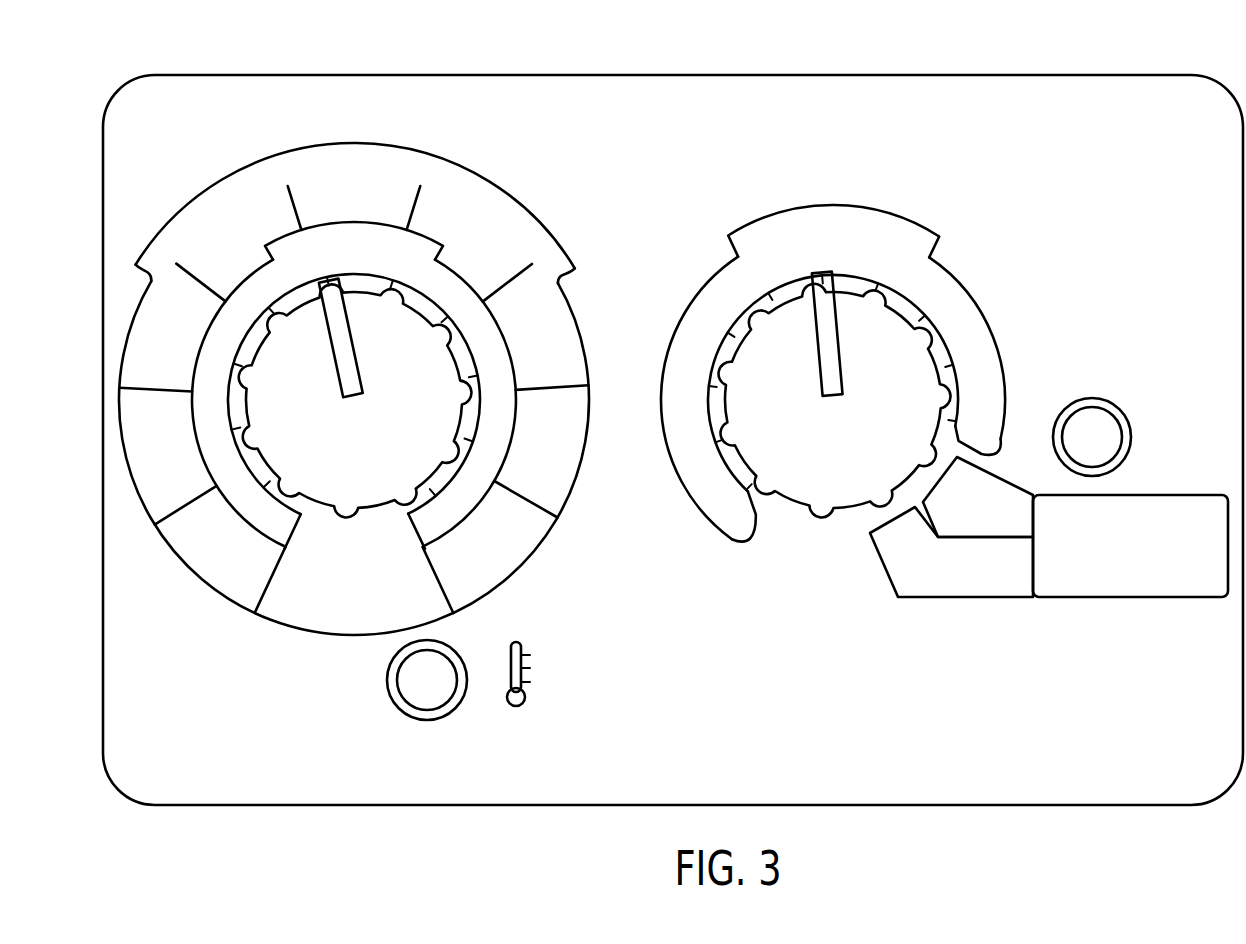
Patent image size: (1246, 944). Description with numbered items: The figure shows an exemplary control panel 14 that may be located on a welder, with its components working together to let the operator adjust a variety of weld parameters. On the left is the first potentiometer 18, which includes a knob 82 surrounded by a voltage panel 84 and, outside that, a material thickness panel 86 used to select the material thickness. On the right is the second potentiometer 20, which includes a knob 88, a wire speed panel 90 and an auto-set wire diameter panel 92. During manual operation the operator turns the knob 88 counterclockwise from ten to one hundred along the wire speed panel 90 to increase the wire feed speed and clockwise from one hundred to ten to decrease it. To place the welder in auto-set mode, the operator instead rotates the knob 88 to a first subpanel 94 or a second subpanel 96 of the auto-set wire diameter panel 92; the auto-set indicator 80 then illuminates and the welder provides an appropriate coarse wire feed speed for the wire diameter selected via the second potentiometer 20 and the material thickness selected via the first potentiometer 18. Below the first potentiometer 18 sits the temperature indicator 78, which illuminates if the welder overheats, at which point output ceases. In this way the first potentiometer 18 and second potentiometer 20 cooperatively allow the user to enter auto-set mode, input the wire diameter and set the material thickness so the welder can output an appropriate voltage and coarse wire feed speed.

The control panel 14 is at (868, 103).
The first potentiometer 18 is at (352, 502).
The second potentiometer 20 is at (835, 465).
The temperature indicator 78 is at (480, 650).
The auto-set indicator 80 is at (1098, 390).
The knob 82 is at (341, 447).
The voltage panel 84 is at (560, 290).
The material thickness panel 86 is at (424, 155).
The knob 88 is at (797, 482).
The wire speed panel 90 is at (975, 323).
The auto-set wire diameter panel 92 is at (1063, 575).
The first subpanel 94 is at (1000, 497).
The second subpanel 96 is at (1005, 582).